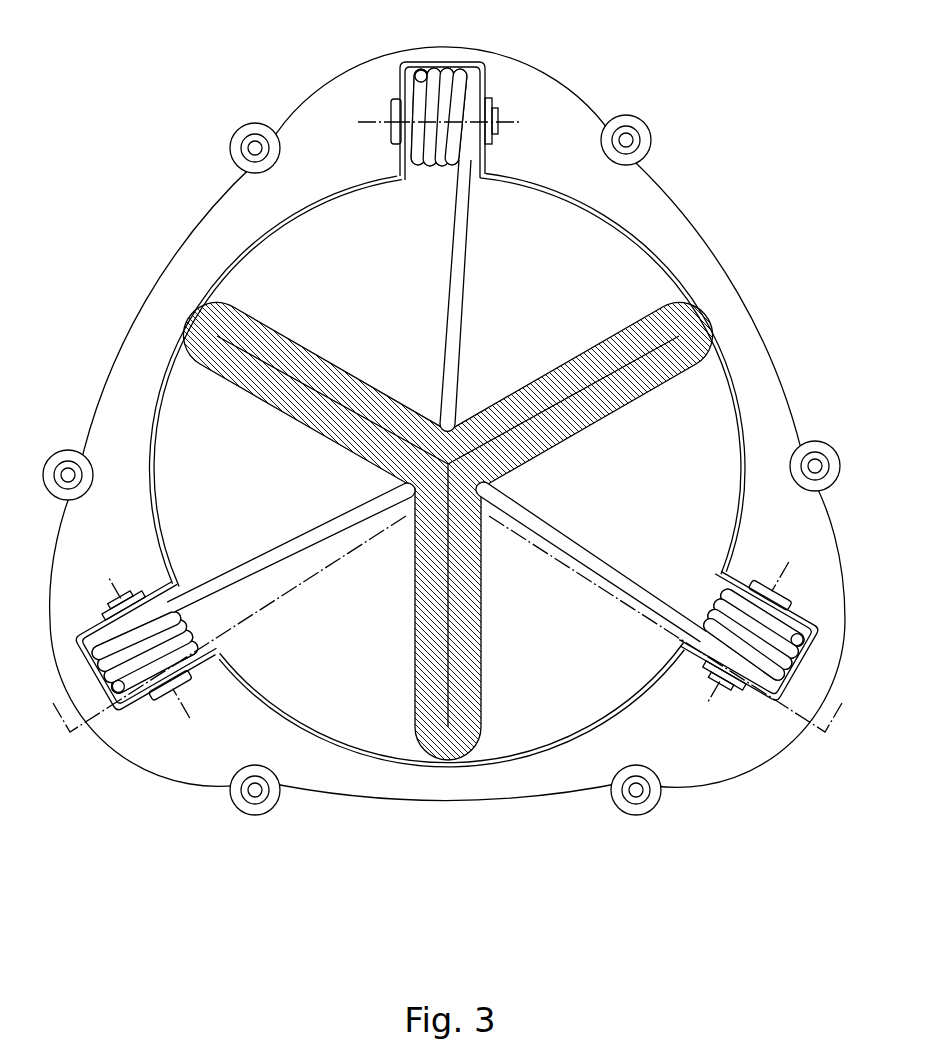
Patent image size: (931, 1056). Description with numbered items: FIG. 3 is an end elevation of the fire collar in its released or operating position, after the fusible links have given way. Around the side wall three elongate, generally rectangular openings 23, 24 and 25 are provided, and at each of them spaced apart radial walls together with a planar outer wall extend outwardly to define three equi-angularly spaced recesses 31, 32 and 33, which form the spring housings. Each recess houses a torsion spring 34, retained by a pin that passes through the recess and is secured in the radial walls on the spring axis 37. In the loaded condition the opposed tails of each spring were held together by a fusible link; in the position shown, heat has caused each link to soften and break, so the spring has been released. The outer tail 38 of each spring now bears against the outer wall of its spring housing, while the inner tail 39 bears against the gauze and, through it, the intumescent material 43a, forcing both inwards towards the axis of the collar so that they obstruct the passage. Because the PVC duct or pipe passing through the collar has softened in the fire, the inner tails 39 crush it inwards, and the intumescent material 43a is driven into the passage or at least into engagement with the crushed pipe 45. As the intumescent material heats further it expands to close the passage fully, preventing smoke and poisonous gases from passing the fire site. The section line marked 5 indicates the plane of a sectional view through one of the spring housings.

The section line 5- 5 is at (447, 626).
The elongate generally rectangular opening 23 is at (718, 602).
The elongate generally rectangular opening 24 is at (425, 170).
The elongate generally rectangular opening 25 is at (193, 630).
The recess 31 is at (790, 673).
The recess 32 is at (470, 65).
The recess 33 is at (78, 643).
The torsion spring 34 is at (420, 95).
The spring axis 37 is at (505, 122).
The outer tail 38 is at (421, 72).
The inner tail 39 is at (463, 301).
The intumescent material 43a is at (287, 267).
The crushed pipe 45 is at (672, 352).